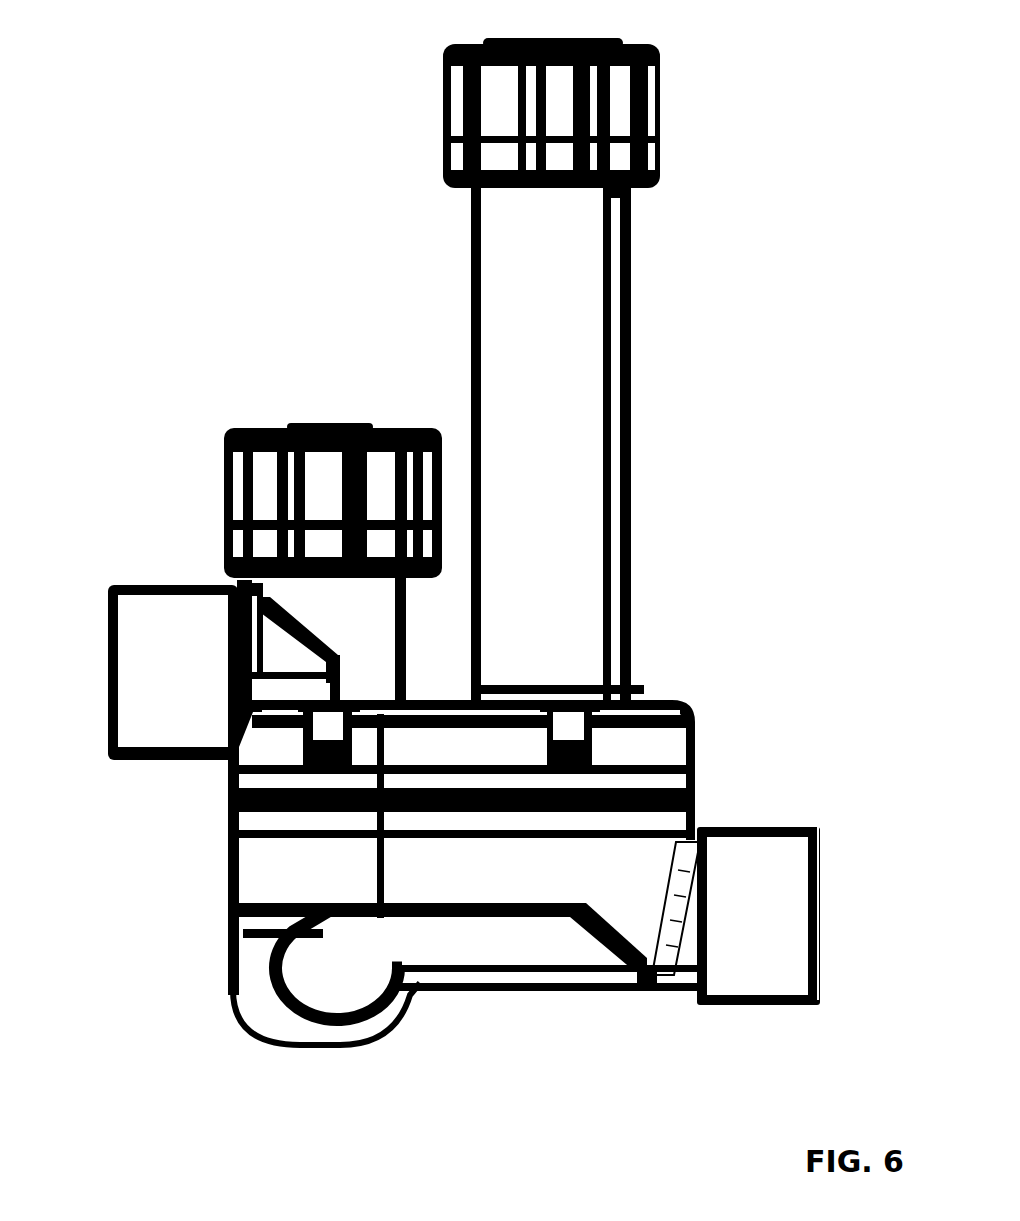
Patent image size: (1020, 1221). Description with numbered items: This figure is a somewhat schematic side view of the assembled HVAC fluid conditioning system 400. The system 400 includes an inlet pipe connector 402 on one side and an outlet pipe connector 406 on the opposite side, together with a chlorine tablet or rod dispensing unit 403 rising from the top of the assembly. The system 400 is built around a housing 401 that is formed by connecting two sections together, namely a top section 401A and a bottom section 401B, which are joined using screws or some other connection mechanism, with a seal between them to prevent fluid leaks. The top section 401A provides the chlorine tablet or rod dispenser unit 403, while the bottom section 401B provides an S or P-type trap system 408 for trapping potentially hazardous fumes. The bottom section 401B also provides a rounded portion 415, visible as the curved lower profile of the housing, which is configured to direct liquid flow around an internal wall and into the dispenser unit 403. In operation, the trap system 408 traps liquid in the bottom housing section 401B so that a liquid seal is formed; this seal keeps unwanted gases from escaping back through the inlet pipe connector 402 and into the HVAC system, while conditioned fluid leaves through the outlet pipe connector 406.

The HVAC fluid conditioning system 400 is at (296, 141).
The housing 401 is at (186, 806).
The top section 401A is at (675, 685).
The bottom section 401B is at (219, 889).
The inlet pipe connector 402 is at (145, 582).
The chlorine tablet or rod dispensing unit 403 is at (672, 259).
The outlet pipe connector 406 is at (748, 828).
The S or P-type trap system 408 is at (231, 1031).
The rounded portion 415 is at (378, 1048).